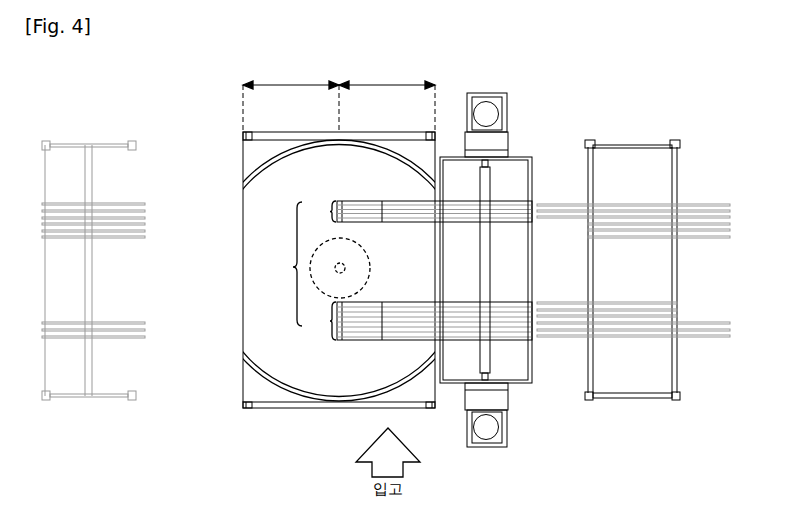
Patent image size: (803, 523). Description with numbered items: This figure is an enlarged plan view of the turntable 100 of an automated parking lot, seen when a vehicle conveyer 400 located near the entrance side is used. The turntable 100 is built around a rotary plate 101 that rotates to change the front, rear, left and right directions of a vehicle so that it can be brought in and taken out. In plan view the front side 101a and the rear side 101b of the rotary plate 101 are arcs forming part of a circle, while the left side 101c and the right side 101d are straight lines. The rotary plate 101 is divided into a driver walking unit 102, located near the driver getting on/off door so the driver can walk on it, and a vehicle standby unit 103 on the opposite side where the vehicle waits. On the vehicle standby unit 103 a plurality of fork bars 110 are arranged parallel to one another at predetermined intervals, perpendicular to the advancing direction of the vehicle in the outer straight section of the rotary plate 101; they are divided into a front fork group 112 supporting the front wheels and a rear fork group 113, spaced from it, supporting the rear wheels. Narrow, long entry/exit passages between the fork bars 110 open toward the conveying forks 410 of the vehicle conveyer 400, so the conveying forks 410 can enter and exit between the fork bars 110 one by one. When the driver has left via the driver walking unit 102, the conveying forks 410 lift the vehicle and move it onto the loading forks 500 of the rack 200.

The turntable 100 is at (275, 408).
The rotary plate 101 is at (252, 245).
The front side of the rotary plate 101a is at (322, 153).
The rear side of the rotary plate 101b is at (321, 389).
The left side of the rotary plate 101c is at (247, 330).
The right side of the rotary plate 101d is at (432, 251).
The driver walking unit 102 is at (291, 99).
The vehicle standby unit 103 is at (387, 99).
The fork bars 110 is at (402, 270).
The front fork group 112 is at (418, 211).
The rear fork group 113 is at (418, 321).
The rack 200 is at (632, 147).
The vehicle conveyer 400 is at (502, 270).
The conveying forks 410 is at (518, 340).
The loading forks 500 is at (688, 205).